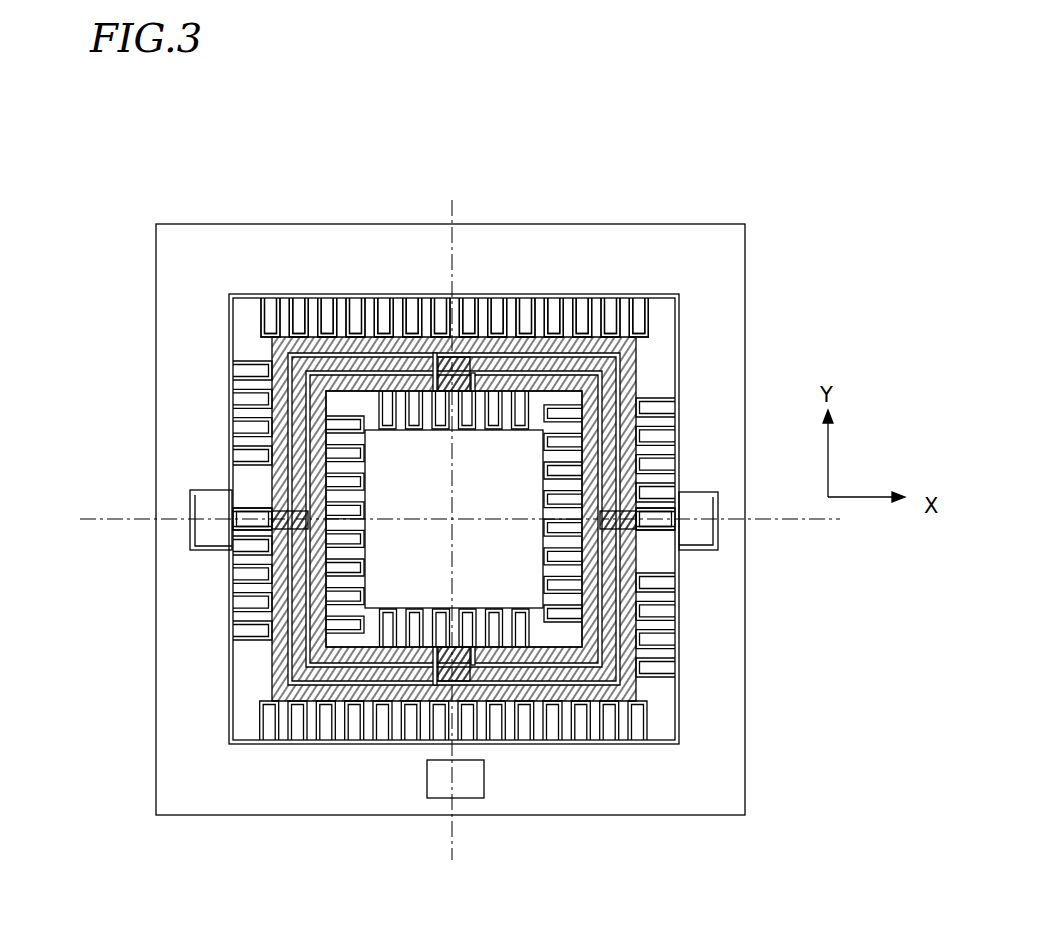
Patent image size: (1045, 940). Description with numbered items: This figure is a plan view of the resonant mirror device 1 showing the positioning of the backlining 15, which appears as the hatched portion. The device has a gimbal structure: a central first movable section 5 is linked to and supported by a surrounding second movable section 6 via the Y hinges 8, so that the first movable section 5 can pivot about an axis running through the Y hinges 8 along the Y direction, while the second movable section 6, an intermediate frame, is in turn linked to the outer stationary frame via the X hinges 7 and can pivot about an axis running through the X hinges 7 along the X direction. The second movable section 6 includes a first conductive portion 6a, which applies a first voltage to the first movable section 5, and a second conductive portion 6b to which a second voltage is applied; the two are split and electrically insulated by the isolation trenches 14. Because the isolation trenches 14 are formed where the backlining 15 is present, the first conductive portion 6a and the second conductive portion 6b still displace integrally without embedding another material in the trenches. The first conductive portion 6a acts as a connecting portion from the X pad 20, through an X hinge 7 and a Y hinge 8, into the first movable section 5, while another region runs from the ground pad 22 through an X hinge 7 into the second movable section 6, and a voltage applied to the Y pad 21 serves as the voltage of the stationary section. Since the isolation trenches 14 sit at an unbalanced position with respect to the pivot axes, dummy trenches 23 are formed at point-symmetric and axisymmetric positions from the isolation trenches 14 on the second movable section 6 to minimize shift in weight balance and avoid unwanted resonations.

The resonant mirror device 1 is at (295, 190).
The first movable section 5 is at (470, 573).
The second movable section 6 is at (655, 678).
The first conductive portion 6a is at (620, 345).
The second conductive portion 6b is at (640, 357).
The X hinges 7 is at (246, 516).
The Y hinges 8 is at (450, 413).
The isolation trenches 14 is at (622, 300).
The backlining 15 is at (560, 692).
The X pad 20 is at (708, 535).
The Y pad 21 is at (440, 786).
The ground pad 22 is at (205, 505).
The dummy trenches 23 is at (352, 672).